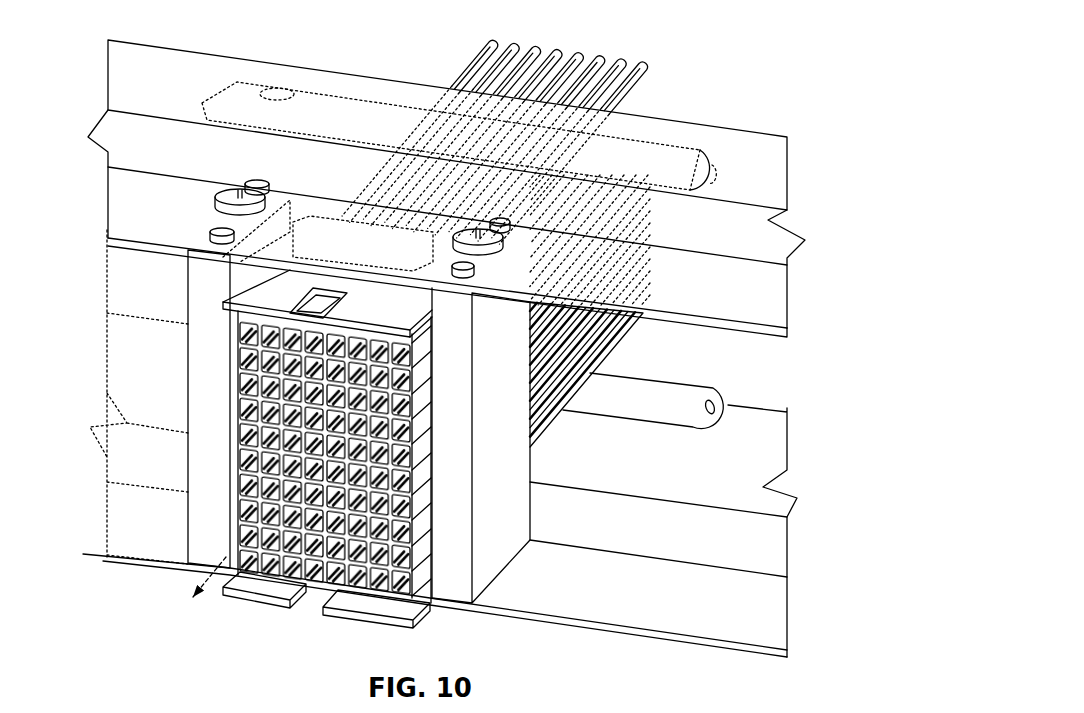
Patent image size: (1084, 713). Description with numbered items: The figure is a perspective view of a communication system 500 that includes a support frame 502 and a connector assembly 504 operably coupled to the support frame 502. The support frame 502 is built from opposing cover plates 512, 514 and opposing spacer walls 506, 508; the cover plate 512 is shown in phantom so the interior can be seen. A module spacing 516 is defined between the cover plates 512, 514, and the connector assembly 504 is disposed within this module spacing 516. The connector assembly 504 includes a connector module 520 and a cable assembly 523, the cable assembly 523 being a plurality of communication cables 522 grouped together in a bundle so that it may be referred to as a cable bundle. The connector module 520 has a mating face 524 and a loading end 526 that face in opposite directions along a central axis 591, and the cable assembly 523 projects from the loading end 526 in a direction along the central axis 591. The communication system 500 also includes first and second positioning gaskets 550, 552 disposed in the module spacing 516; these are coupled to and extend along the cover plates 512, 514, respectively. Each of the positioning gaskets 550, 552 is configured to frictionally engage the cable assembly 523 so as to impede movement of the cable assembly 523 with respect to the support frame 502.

The communication system 500 is at (701, 62).
The support frame 502 is at (97, 233).
The connector assembly 504 is at (543, 497).
The spacer wall 506 is at (200, 305).
The spacer wall 508 is at (498, 542).
The cover plate 512 is at (790, 263).
The cover plate 514 is at (683, 624).
The module spacing 516 is at (643, 313).
The connector module 520 is at (388, 595).
The communication cables 522 is at (593, 327).
The cable assembly 523 is at (620, 56).
The mating face 524 is at (321, 565).
The loading end 526 is at (557, 396).
The first positioning gasket 550 is at (700, 157).
The second positioning gasket 552 is at (729, 400).
The central axis 591 is at (217, 573).